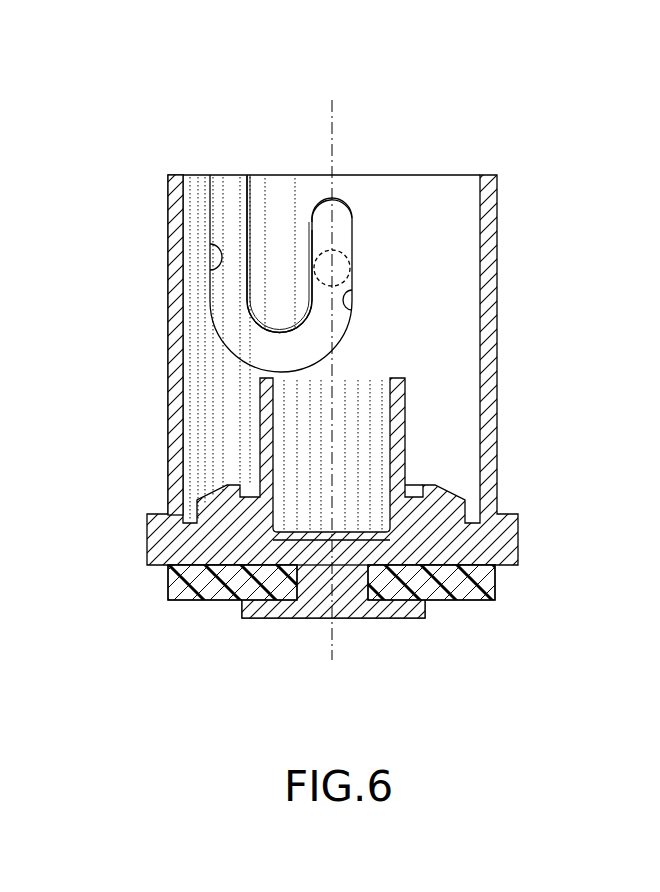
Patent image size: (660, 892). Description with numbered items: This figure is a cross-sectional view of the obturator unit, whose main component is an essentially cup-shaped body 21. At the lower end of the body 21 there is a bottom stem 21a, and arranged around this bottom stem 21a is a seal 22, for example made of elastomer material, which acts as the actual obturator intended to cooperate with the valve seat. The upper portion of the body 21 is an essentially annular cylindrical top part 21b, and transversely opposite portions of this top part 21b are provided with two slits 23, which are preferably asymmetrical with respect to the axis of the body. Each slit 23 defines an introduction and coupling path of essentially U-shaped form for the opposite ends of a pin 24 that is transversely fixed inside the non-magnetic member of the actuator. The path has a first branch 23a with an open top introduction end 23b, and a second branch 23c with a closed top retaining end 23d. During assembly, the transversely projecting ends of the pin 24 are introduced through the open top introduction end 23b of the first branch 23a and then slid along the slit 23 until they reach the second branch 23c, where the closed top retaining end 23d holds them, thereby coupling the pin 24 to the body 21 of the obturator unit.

The cup-shaped body 21 is at (515, 243).
The bottom stem 21a is at (352, 578).
The annular cylindrical top part 21b is at (168, 226).
The seal 22 is at (210, 600).
The slit 23 is at (232, 165).
The first branch 23a is at (207, 272).
The open top introduction end 23b is at (247, 175).
The second branch 23c is at (352, 308).
The closed top retaining end 23d is at (312, 207).
The pin 24 is at (340, 200).